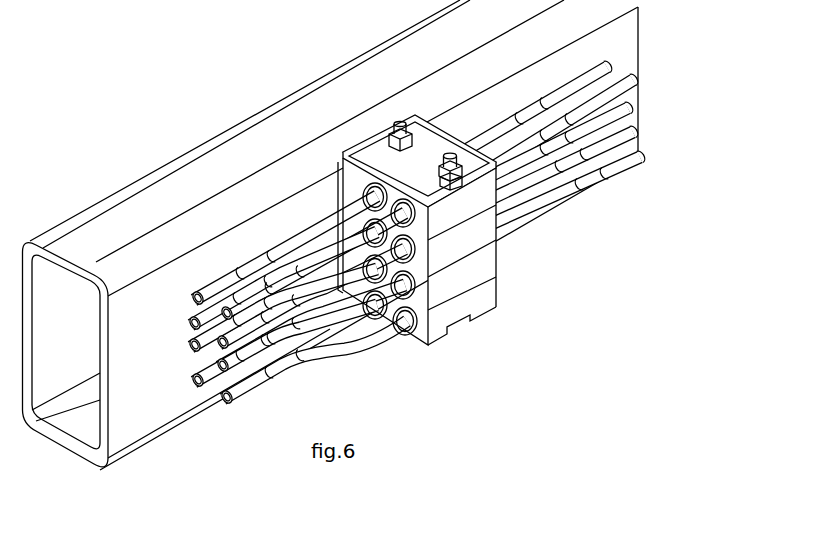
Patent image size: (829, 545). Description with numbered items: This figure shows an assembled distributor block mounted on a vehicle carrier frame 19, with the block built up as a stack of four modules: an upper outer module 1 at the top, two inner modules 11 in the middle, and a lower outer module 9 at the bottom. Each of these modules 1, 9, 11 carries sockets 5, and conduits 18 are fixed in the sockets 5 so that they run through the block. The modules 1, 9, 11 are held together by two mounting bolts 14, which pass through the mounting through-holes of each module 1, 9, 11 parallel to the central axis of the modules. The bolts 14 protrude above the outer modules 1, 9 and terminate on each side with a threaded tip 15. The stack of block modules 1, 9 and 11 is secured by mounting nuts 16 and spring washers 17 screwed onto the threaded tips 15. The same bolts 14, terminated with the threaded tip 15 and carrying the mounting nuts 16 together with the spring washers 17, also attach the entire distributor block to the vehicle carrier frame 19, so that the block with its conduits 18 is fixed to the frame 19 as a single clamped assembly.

The vehicle carrier frame 19 is at (142, 218).
The conduits 18 is at (301, 304).
The threaded tip 15 is at (448, 162).
The mounting nuts 16 is at (458, 168).
The spring washers 17 is at (458, 180).
The upper outer module 1 is at (480, 202).
The inner modules 11 is at (472, 270).
The lower outer module 9 is at (472, 303).
The mounting bolts 14 is at (458, 325).
The sockets 5 is at (417, 325).